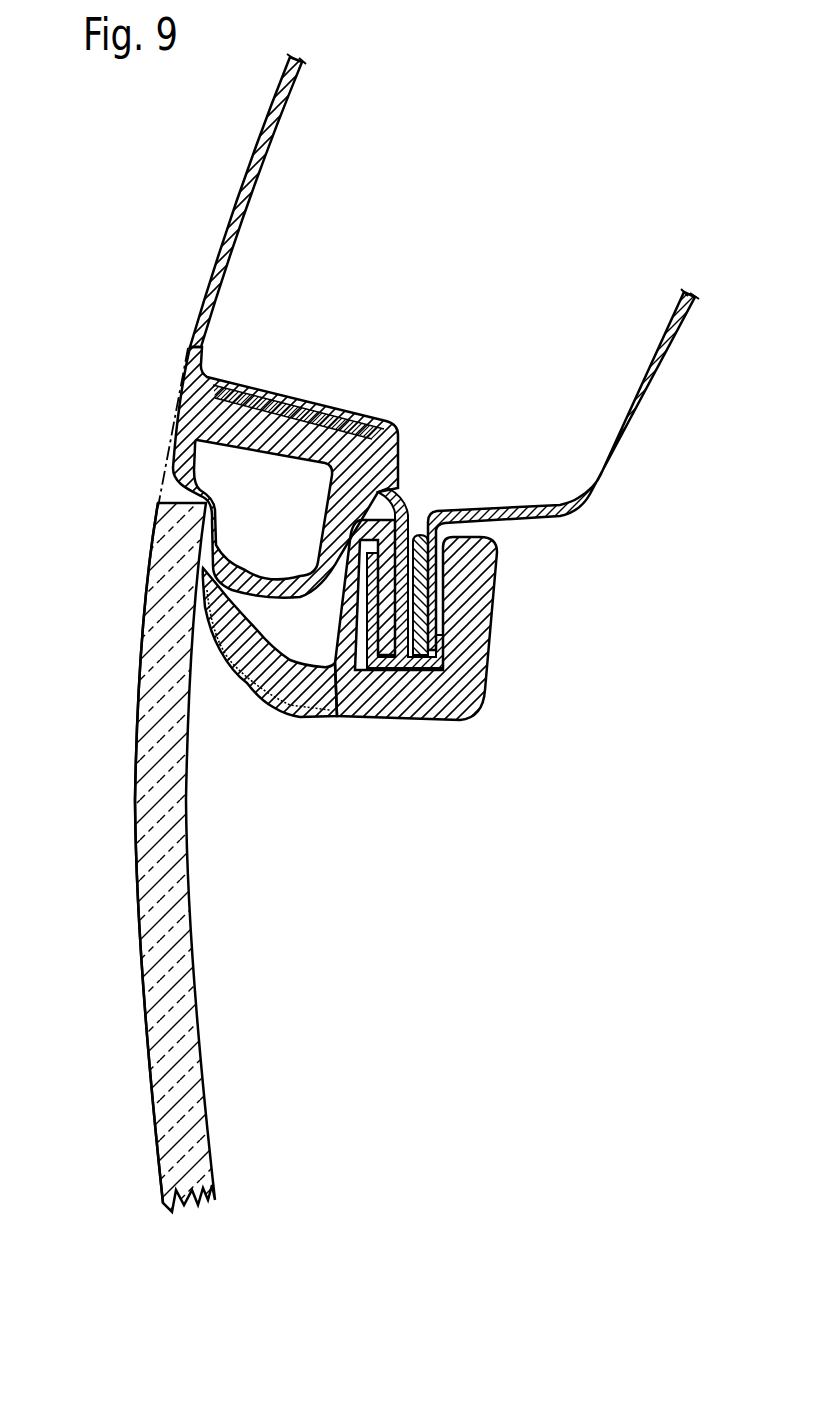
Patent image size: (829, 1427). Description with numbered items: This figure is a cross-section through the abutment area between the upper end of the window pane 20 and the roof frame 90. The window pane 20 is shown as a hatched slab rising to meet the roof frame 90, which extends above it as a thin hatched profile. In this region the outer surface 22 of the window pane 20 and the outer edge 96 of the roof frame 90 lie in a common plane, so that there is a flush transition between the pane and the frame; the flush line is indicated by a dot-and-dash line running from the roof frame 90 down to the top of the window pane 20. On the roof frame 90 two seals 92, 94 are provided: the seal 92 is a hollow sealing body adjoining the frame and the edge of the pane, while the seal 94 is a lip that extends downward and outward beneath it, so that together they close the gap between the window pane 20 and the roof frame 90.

The window pane 20 is at (172, 953).
The outer surface 22 is at (134, 815).
The roof frame 90 is at (207, 323).
The seal 92 is at (173, 433).
The seal 94 is at (342, 716).
The outer edge 96 is at (201, 289).